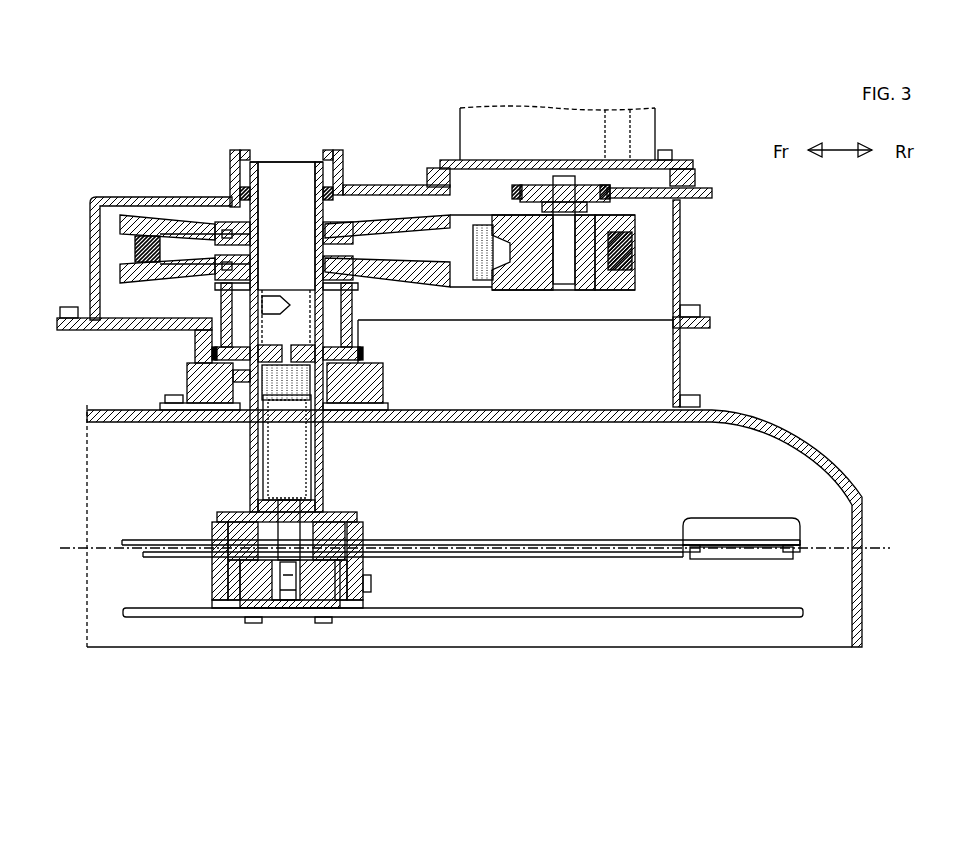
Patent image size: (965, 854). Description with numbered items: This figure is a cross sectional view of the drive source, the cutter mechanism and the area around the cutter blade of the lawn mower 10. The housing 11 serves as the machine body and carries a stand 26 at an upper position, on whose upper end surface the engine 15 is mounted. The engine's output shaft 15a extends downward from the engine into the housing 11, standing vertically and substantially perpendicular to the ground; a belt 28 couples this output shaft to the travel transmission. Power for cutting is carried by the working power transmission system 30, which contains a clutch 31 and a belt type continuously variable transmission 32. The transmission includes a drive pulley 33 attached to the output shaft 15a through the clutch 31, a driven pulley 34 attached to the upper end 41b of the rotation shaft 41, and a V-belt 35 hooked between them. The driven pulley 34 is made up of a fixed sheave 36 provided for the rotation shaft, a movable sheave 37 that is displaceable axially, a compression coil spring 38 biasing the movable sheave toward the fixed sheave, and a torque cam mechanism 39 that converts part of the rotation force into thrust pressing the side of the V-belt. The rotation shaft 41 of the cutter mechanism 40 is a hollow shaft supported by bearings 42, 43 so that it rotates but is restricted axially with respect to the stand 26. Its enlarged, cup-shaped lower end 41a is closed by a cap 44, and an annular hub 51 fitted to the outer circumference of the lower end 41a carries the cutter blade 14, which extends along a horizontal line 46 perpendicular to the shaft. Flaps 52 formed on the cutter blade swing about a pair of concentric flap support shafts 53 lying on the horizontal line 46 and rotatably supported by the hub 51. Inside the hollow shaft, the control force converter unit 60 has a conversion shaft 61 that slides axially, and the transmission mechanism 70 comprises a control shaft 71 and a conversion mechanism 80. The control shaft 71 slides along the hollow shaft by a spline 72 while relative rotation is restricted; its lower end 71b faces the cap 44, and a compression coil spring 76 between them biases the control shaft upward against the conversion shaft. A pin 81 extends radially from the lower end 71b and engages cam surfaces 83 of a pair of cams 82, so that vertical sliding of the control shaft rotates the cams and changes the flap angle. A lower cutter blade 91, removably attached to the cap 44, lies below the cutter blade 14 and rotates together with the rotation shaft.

The lawn mower 10 is at (740, 128).
The housing 11 is at (798, 440).
The cutter blade 14 is at (160, 557).
The drive source 15 is at (560, 135).
The output shaft 15a is at (572, 288).
The stand 26 is at (95, 203).
The belt 28 is at (712, 192).
The working power transmission system 30 is at (650, 255).
The clutch 31 is at (680, 225).
The belt type continuously variable transmission 32 is at (577, 375).
The drive pulley 33 is at (512, 292).
The driven pulley 34 is at (440, 290).
The V-belt 35 is at (478, 278).
The fixed sheave 36 is at (120, 226).
The movable sheave 37 is at (120, 268).
The compression coil spring 38 is at (220, 305).
The torque cam mechanism 39 is at (213, 332).
The cutter mechanism 40 is at (142, 485).
The rotation shaft 41 is at (248, 440).
The lower end 41a is at (226, 578).
The upper end 41b is at (232, 160).
The bearing 42 is at (240, 195).
The bearing 43 is at (198, 386).
The cap 44 is at (300, 612).
The horizontal line 46 is at (68, 552).
The hub 51 is at (355, 612).
The flap 52 is at (737, 525).
The flap support shaft 53 is at (128, 558).
The control force converter unit 60 is at (285, 275).
The conversion shaft 61 is at (300, 290).
The transmission mechanism 70 is at (179, 502).
The control shaft 71 is at (276, 460).
The lower end 71b is at (320, 462).
The spline 72 is at (277, 398).
The compression coil spring 76 is at (262, 612).
The conversion mechanism 80 is at (240, 514).
The pin 81 is at (366, 570).
The cam 82 is at (352, 518).
The cam surface 83 is at (325, 518).
The lower cutter blade 91 is at (640, 618).